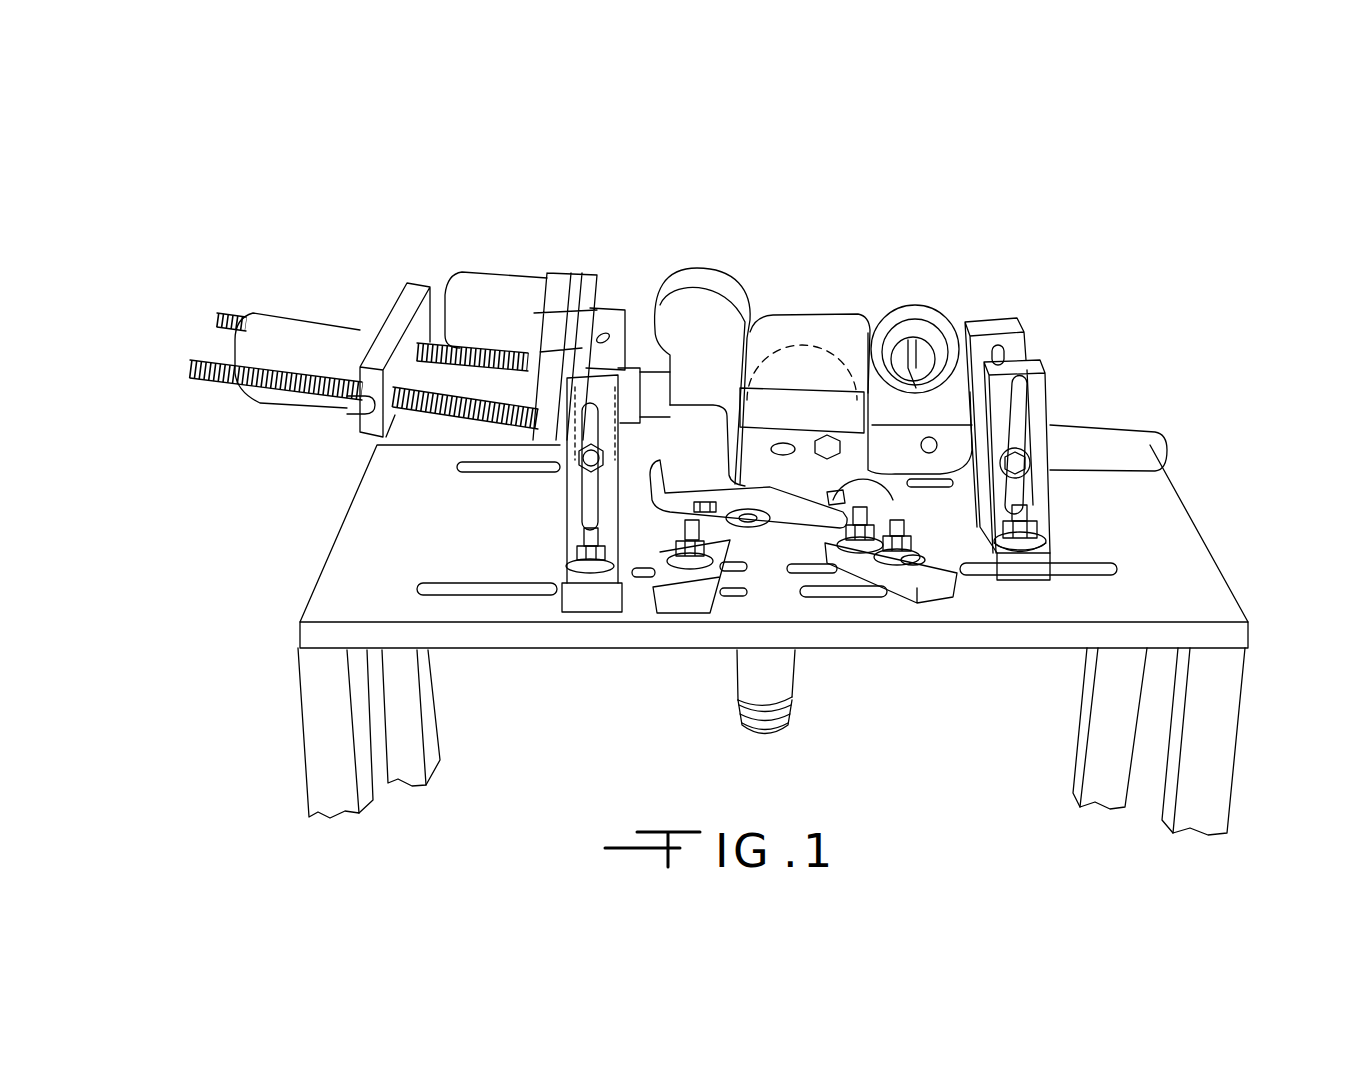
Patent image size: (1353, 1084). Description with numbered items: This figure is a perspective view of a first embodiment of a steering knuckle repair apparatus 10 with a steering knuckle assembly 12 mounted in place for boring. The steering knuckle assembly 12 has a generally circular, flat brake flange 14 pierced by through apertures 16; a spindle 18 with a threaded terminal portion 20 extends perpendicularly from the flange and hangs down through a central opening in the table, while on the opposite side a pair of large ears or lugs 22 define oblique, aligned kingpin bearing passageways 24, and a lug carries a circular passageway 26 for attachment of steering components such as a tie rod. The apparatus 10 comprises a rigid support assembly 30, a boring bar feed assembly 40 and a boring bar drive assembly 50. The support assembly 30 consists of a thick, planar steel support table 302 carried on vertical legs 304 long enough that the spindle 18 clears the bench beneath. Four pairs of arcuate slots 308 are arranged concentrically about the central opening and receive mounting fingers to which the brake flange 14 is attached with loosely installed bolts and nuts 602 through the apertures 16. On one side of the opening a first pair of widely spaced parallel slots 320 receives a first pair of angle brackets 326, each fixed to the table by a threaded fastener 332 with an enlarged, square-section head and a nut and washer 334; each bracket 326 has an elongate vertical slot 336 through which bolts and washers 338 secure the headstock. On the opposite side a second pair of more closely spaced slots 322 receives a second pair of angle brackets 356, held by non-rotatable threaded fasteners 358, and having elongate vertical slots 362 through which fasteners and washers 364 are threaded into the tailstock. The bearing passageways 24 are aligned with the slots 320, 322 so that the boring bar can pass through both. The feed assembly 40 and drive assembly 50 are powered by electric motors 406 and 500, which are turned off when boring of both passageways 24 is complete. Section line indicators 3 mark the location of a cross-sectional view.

The steering knuckle repair apparatus 10 is at (1118, 176).
The steering knuckle assembly 12 is at (760, 402).
The brake flange 14 is at (787, 517).
The through apertures 16 is at (748, 525).
The spindle 18 is at (778, 676).
The threaded terminal portion 20 is at (750, 722).
The ears or lugs 22 is at (723, 330).
The bearing passageways 24 is at (802, 364).
The circular passageway 26 is at (920, 338).
The rigid support assembly 30 is at (735, 640).
The boring bar feed assembly 40 is at (559, 314).
The boring bar drive assembly 50 is at (345, 351).
The support table 302 is at (1183, 585).
The vertical legs 304 is at (430, 737).
The arcuate slots 308 is at (820, 600).
The first pair of slots 320 is at (405, 586).
The second pair of slots 322 is at (1097, 570).
The first pair of angle brackets 326 is at (521, 493).
The threaded fasteners 332 is at (565, 540).
The nut and washer 334 is at (570, 565).
The elongate vertical slot 336 is at (605, 418).
The bolts or threaded fasteners and washers 338 is at (567, 472).
The second pair of angle brackets 356 is at (1002, 323).
The threaded fastener 358 is at (1037, 505).
The elongate vertical slots 362 is at (1068, 469).
The bolts or threaded fasteners and washers 364 is at (1047, 453).
The electric motor 406 is at (507, 268).
The electric motor 500 is at (288, 412).
The bolts and nuts 602 is at (703, 497).
The section line 3 is at (146, 322).